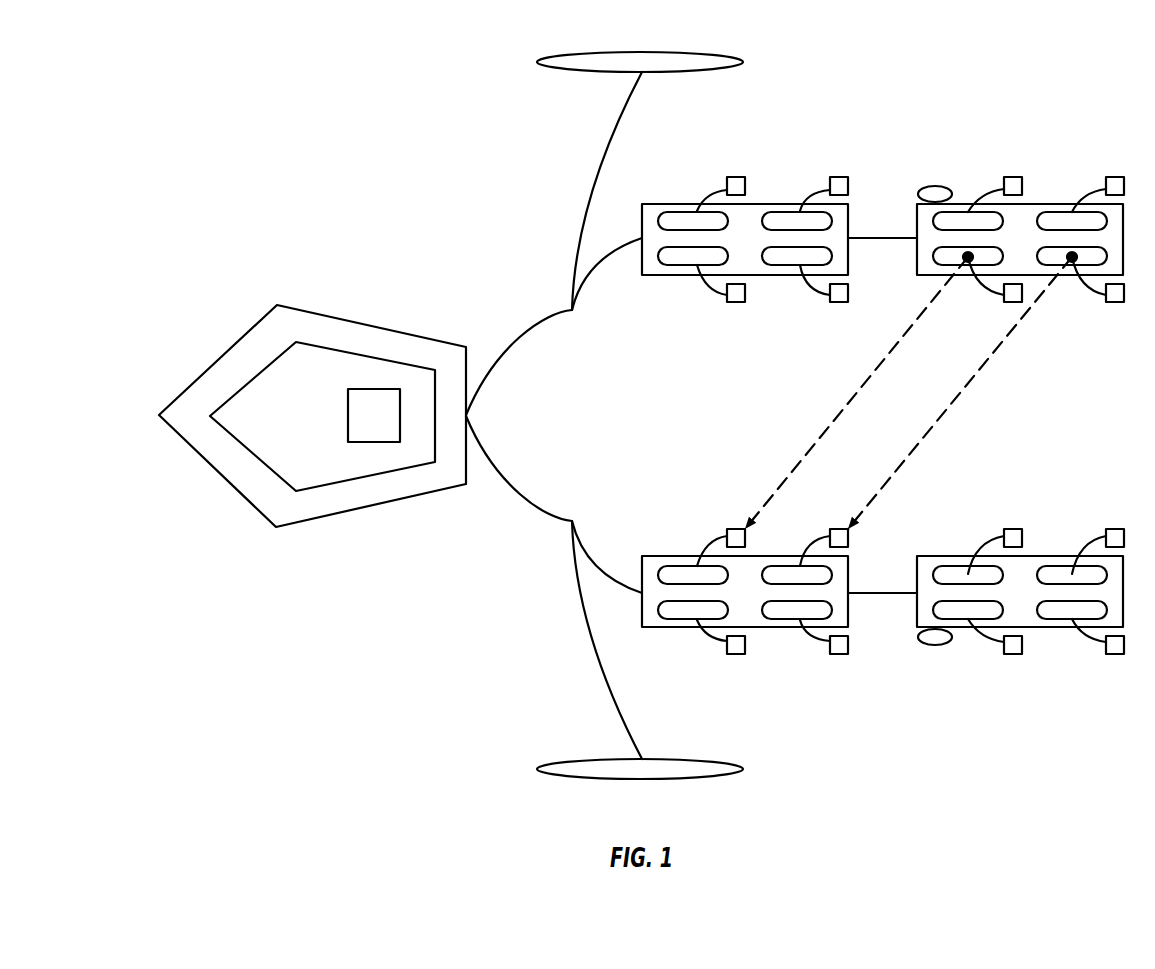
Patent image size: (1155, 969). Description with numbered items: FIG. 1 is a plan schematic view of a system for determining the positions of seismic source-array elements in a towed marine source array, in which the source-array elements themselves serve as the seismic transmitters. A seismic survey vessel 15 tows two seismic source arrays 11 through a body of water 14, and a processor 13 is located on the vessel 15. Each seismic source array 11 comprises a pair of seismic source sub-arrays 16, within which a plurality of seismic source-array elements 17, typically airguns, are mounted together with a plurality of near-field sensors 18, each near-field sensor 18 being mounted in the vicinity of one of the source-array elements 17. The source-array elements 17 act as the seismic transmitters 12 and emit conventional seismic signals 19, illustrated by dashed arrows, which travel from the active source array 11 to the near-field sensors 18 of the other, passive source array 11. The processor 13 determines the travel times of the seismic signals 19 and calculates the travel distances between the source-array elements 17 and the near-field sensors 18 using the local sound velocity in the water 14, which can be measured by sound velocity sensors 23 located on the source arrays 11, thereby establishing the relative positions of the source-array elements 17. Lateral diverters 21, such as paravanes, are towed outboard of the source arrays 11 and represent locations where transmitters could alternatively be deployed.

The seismic source array 11 is at (947, 80).
The seismic transmitter 12 is at (682, 217).
The processor 13 is at (372, 398).
The body of water 14 is at (346, 192).
The seismic survey vessel 15 is at (233, 372).
The seismic source sub-array 16 is at (938, 153).
The seismic source-array element 17 is at (763, 153).
The near-field sensor 18 is at (1115, 177).
The seismic signal 19 is at (867, 383).
The diverter 21 is at (579, 72).
The sound velocity sensor 23 is at (938, 186).